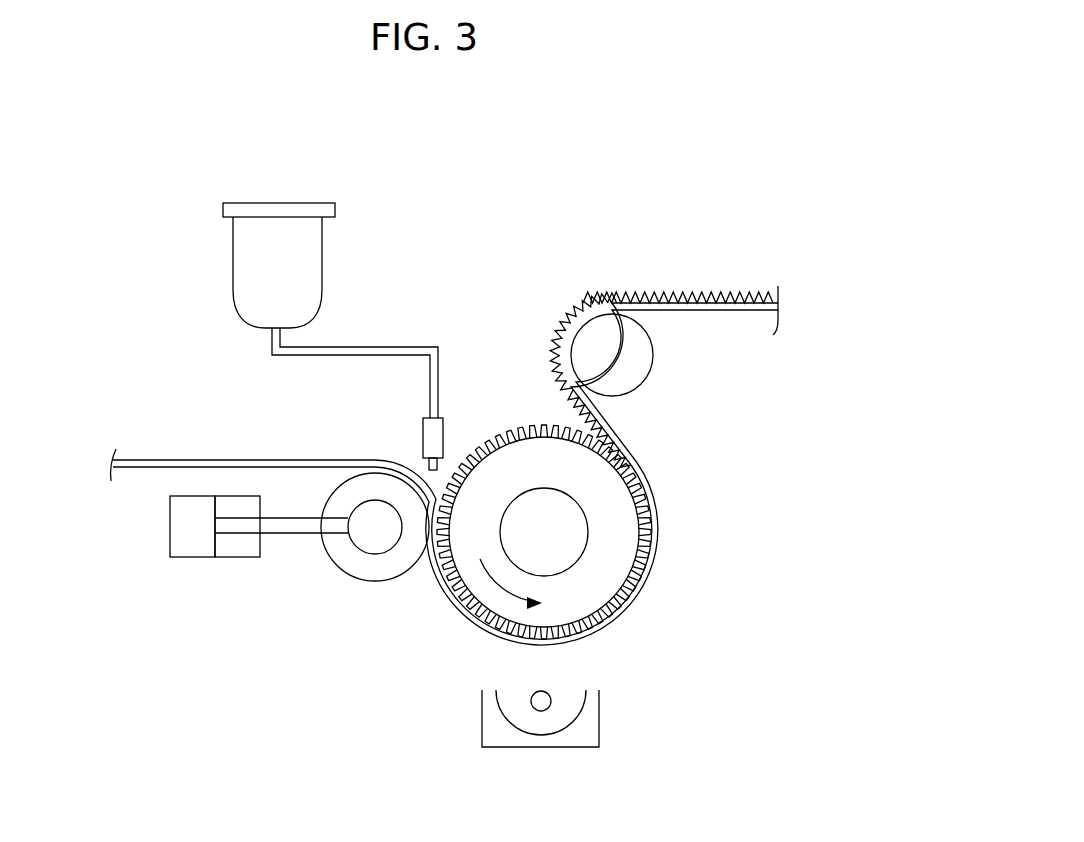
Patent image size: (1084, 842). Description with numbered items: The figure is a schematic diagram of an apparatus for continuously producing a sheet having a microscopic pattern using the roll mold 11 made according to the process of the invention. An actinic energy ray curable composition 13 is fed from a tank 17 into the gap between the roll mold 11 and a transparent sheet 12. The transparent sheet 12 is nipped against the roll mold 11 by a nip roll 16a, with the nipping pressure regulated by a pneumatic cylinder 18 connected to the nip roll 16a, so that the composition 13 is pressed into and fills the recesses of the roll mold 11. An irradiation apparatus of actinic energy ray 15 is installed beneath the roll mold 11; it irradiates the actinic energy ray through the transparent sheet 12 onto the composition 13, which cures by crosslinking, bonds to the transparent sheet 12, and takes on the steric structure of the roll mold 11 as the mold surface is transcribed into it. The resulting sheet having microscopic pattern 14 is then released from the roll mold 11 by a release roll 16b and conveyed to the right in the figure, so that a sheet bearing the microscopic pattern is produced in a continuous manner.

The roll mold 11 is at (618, 518).
The transparent sheet 12 is at (176, 460).
The actinic energy ray curable composition 13 is at (462, 460).
The sheet having microscopic pattern 14 is at (640, 289).
The irradiation apparatus of actinic energy ray 15 is at (587, 728).
The nip roll 16a is at (382, 570).
The release roll 16b is at (628, 358).
The tank 17 is at (248, 271).
The pneumatic cylinder 18 is at (198, 545).